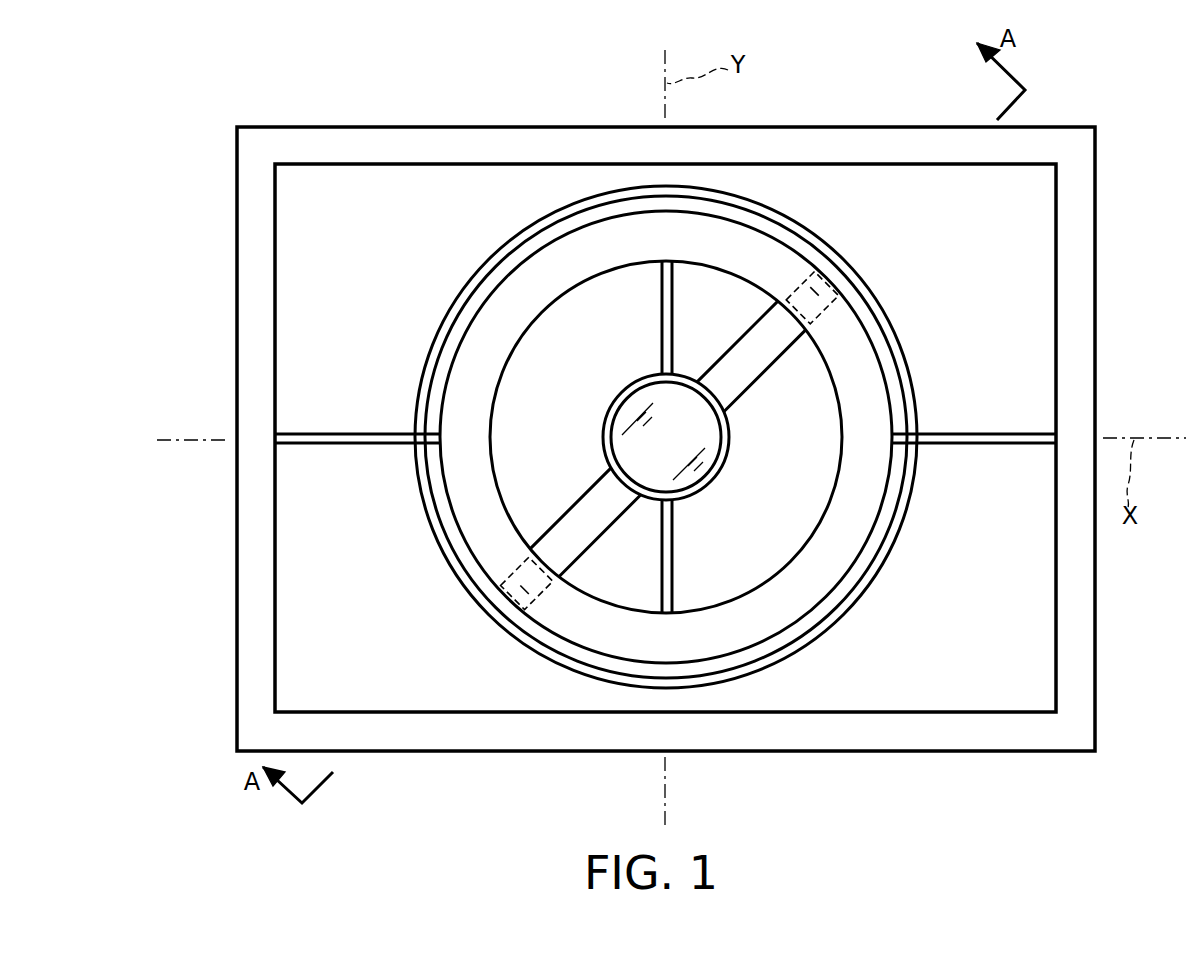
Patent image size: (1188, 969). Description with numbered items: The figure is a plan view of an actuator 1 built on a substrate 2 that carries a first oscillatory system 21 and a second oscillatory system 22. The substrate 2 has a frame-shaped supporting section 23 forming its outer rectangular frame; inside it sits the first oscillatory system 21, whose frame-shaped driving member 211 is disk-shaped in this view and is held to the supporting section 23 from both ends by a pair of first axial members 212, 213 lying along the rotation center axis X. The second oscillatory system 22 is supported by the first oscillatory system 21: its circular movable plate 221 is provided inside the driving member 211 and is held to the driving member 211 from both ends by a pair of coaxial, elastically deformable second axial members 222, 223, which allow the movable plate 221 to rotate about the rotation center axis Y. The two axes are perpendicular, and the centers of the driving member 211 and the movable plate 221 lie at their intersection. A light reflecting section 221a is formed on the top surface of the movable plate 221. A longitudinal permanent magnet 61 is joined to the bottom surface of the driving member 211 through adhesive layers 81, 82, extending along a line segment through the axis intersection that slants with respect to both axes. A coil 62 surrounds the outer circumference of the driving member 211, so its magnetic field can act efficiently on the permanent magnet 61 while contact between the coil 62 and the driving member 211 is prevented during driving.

The actuator 1 is at (1108, 196).
The substrate 2 is at (1096, 299).
The first oscillatory system 21 is at (674, 795).
The driving member 211 is at (752, 625).
The first axial member 212 is at (363, 444).
The first axial member 213 is at (970, 444).
The second oscillatory system 22 is at (172, 203).
The movable plate 221 is at (603, 416).
The light reflecting section 221a is at (705, 439).
The second axial member 222 is at (663, 308).
The second axial member 223 is at (665, 547).
The supporting section 23 is at (366, 150).
The permanent magnet 61 is at (753, 367).
The coil 62 is at (905, 373).
The adhesive layer 81 is at (510, 598).
The adhesive layer 82 is at (822, 285).